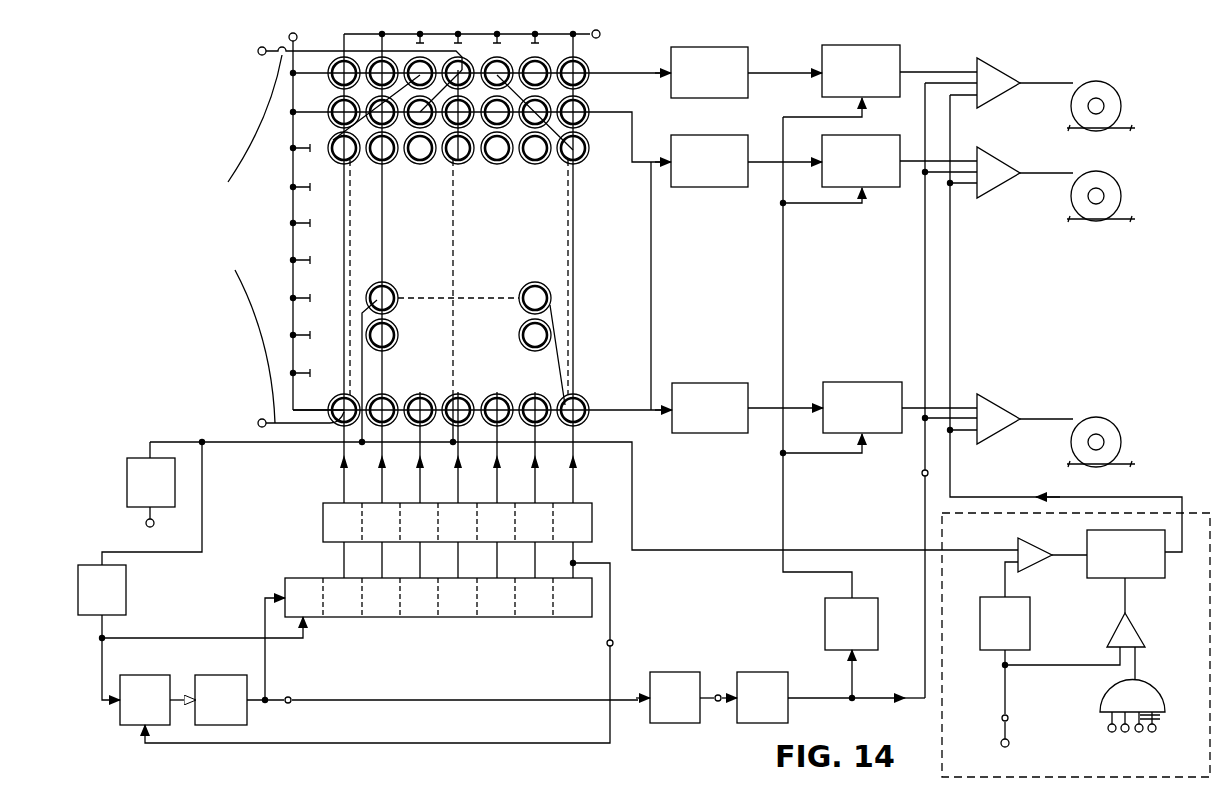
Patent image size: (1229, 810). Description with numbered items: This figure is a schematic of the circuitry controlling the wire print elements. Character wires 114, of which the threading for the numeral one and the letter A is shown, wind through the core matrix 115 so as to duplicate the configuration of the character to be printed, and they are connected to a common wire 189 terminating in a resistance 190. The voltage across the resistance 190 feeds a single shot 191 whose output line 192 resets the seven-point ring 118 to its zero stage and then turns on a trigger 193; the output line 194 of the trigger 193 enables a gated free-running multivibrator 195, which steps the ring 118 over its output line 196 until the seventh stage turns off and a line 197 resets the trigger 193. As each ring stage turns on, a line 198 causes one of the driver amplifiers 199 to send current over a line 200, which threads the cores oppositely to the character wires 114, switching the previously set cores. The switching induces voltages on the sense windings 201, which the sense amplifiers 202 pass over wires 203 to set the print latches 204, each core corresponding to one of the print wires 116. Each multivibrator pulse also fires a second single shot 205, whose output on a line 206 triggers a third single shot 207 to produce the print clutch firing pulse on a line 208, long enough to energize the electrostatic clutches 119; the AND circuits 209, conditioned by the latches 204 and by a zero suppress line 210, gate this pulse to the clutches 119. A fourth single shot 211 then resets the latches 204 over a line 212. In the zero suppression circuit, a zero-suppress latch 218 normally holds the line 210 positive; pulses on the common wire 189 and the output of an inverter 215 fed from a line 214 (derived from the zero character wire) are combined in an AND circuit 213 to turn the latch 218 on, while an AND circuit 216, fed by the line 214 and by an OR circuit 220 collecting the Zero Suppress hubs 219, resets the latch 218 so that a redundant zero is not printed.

The character wires 114 is at (317, 228).
The core matrix 115 is at (516, 232).
The print wires 116 is at (1120, 128).
The 7-point ring 118 is at (452, 620).
The electrostatic clutches 119 is at (1072, 113).
The common wire 189 is at (284, 446).
The resistance 190 is at (141, 458).
The single shot 191 is at (126, 590).
The output line 192 is at (102, 628).
The trigger 193 is at (136, 675).
The output line 194 is at (182, 690).
The gated free-running multivibrator 195 is at (212, 675).
The output line 196 is at (262, 676).
The line 197 is at (612, 655).
The lines 198 is at (455, 568).
The driver amplifiers 199 is at (592, 516).
The lines 200 is at (537, 488).
The sense windings 201 is at (645, 103).
The sense amplifiers 202 is at (712, 48).
The wires 203 is at (775, 84).
The print latches 204 is at (889, 97).
The second single shot 205 is at (668, 673).
The line 206 is at (718, 708).
The third single shot 207 is at (754, 673).
The line 208 is at (922, 238).
The AND circuits 209 is at (994, 105).
The zero suppress line 210 is at (950, 248).
The fourth single shot 211 is at (863, 598).
The line 212 is at (800, 218).
The AND circuit 213 is at (1040, 546).
The line 214 is at (1050, 670).
The inverter 215 is at (1030, 618).
The AND circuit 216 is at (1132, 634).
The zero-suppress latch 218 is at (1165, 568).
The Zero Suppress hubs 219 is at (1158, 719).
The OR circuit 220 is at (1145, 688).